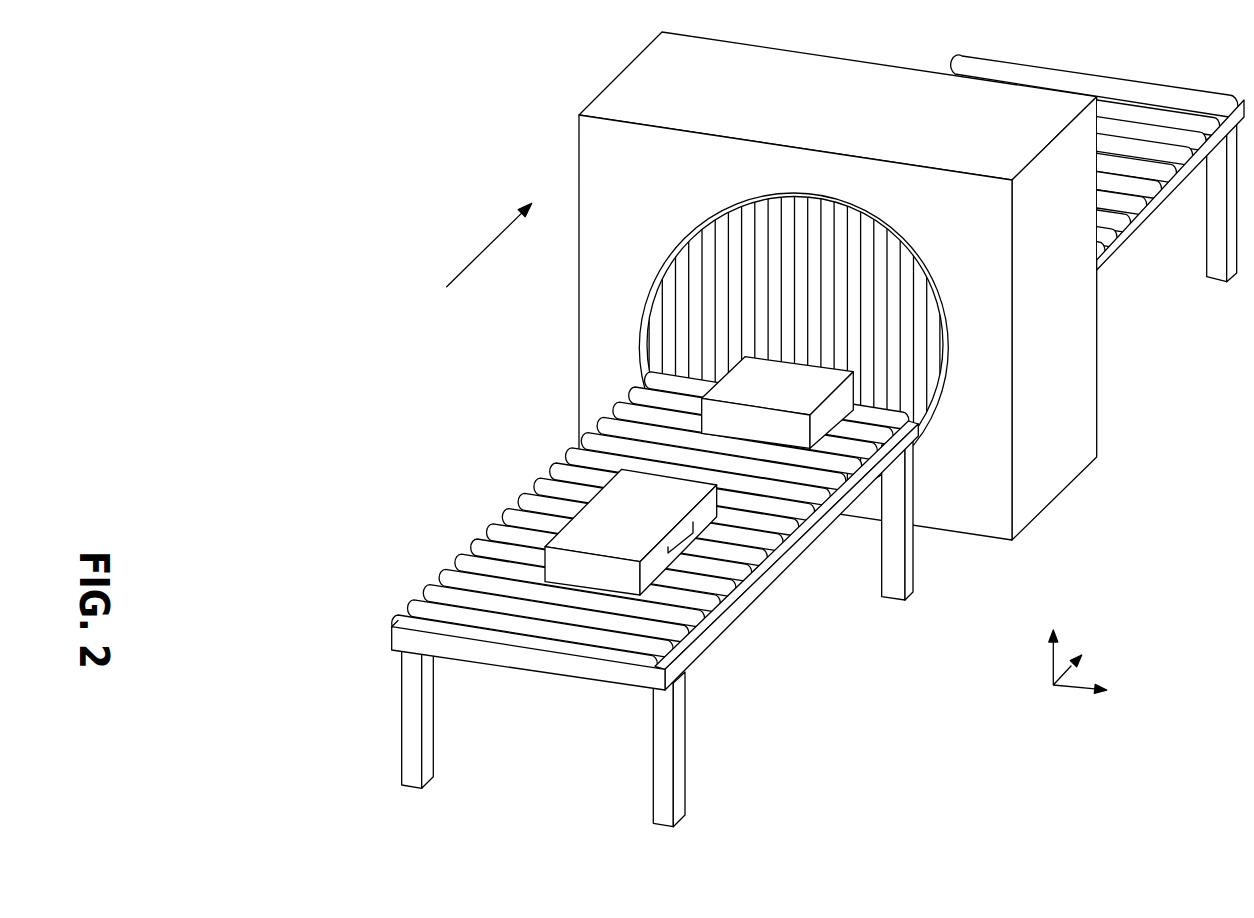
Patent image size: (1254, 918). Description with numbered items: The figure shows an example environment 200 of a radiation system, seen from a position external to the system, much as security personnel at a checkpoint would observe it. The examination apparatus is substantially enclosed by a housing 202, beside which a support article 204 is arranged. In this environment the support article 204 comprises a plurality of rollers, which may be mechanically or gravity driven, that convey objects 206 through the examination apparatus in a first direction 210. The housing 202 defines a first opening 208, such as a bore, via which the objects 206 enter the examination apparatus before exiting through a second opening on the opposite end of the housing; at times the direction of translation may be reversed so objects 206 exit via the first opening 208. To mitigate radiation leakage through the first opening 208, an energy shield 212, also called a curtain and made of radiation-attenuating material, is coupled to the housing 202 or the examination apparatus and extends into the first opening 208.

The environment 200 is at (365, 57).
The housing 202 is at (620, 74).
The support article 204 is at (517, 498).
The objects 206 is at (796, 396).
The first opening 208 is at (703, 223).
The first direction 210 is at (490, 242).
The energy shield 212 is at (865, 264).